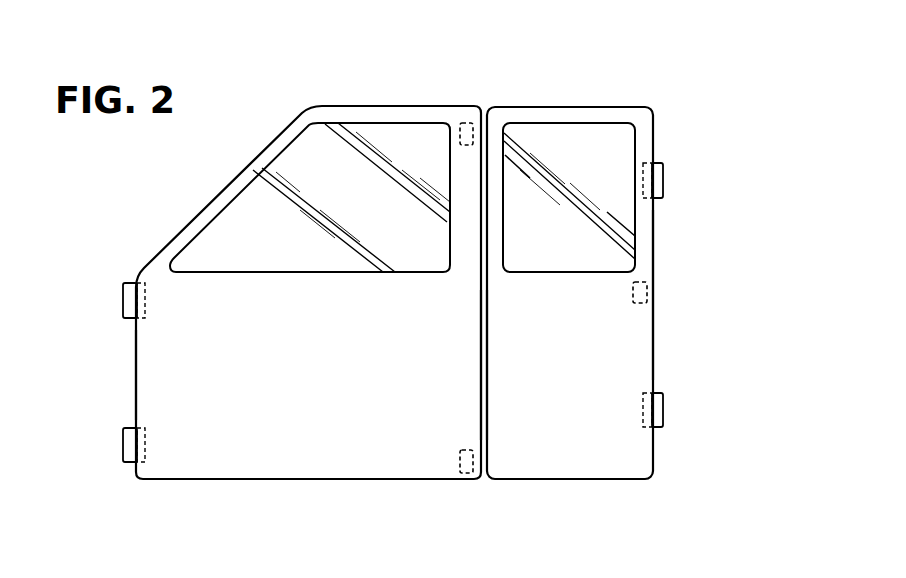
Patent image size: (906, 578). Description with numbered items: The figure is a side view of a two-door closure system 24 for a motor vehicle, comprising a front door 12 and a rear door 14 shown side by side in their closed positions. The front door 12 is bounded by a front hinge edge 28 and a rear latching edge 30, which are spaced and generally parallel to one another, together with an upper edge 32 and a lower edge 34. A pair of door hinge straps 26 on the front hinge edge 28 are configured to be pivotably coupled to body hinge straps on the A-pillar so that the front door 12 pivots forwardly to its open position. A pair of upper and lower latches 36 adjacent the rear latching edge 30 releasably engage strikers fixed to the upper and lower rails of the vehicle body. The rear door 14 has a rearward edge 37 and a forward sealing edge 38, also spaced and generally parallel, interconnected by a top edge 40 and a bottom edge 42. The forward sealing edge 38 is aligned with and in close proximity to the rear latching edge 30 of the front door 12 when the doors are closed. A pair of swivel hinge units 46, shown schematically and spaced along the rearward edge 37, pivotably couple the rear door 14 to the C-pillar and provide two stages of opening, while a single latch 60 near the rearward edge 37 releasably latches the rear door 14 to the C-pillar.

The front door 12 is at (349, 103).
The rear door 14 is at (603, 104).
The two-door closure system 24 is at (500, 80).
The door hinge straps 26 is at (128, 300).
The front hinge edge 28 is at (136, 373).
The rear latching edge 30 is at (488, 302).
The upper edge 32 is at (405, 106).
The lower edge 34 is at (295, 480).
The latches 36 is at (465, 121).
The rearward edge 37 is at (653, 240).
The forward sealing edge 38 is at (482, 374).
The top edge 40 is at (543, 107).
The bottom edge 42 is at (565, 480).
The swivel hinge units 46 is at (666, 181).
The latch 60 is at (647, 293).